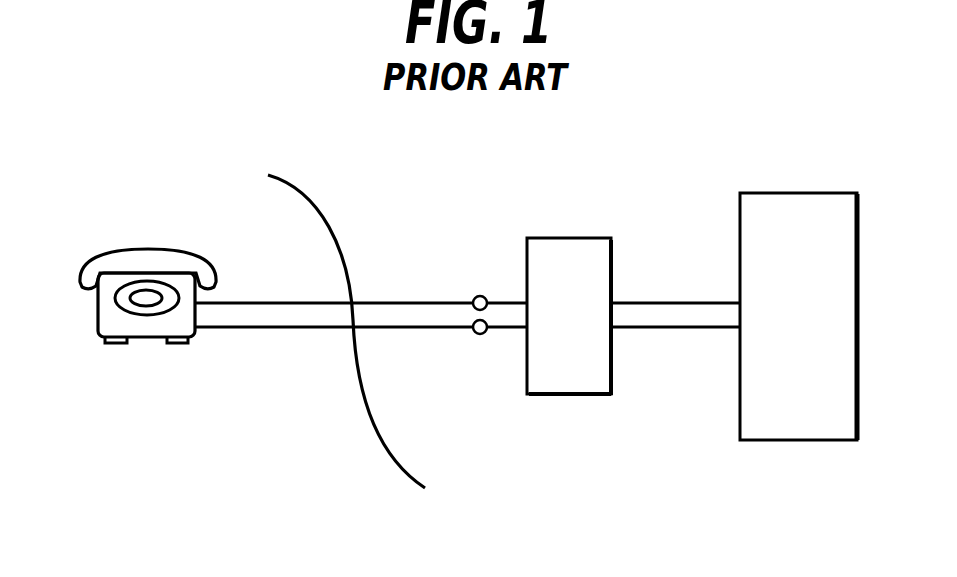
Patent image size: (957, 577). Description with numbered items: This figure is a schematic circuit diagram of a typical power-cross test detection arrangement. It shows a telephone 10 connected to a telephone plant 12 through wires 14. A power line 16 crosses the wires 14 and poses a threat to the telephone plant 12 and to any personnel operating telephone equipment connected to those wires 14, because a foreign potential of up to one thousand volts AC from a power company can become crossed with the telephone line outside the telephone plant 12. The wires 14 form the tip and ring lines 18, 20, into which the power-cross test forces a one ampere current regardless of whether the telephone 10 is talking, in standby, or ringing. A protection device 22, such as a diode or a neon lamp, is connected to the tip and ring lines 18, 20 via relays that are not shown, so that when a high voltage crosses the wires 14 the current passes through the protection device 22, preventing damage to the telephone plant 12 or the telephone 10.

The telephone 10 is at (138, 352).
The telephone plant 12 is at (787, 445).
The wires 14 is at (307, 330).
The power line 16 is at (308, 193).
The tip line 18 is at (500, 297).
The ring line 20 is at (500, 334).
The protection device 22 is at (572, 396).